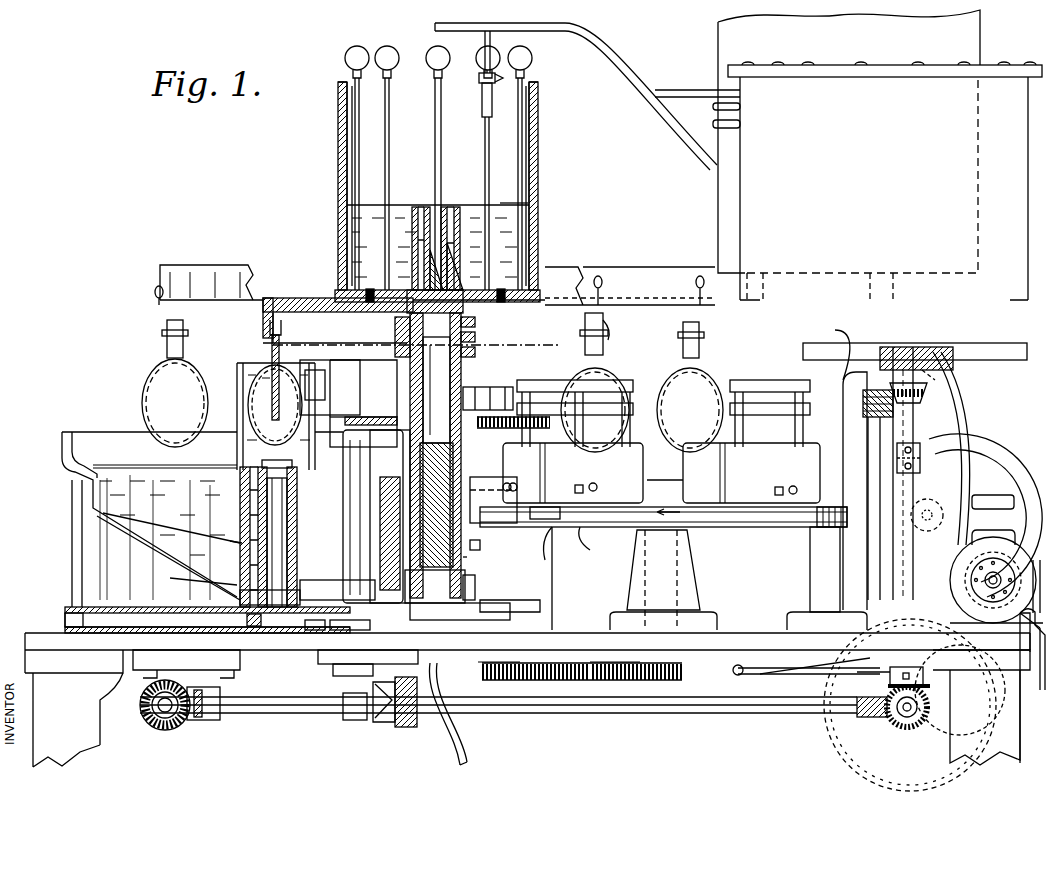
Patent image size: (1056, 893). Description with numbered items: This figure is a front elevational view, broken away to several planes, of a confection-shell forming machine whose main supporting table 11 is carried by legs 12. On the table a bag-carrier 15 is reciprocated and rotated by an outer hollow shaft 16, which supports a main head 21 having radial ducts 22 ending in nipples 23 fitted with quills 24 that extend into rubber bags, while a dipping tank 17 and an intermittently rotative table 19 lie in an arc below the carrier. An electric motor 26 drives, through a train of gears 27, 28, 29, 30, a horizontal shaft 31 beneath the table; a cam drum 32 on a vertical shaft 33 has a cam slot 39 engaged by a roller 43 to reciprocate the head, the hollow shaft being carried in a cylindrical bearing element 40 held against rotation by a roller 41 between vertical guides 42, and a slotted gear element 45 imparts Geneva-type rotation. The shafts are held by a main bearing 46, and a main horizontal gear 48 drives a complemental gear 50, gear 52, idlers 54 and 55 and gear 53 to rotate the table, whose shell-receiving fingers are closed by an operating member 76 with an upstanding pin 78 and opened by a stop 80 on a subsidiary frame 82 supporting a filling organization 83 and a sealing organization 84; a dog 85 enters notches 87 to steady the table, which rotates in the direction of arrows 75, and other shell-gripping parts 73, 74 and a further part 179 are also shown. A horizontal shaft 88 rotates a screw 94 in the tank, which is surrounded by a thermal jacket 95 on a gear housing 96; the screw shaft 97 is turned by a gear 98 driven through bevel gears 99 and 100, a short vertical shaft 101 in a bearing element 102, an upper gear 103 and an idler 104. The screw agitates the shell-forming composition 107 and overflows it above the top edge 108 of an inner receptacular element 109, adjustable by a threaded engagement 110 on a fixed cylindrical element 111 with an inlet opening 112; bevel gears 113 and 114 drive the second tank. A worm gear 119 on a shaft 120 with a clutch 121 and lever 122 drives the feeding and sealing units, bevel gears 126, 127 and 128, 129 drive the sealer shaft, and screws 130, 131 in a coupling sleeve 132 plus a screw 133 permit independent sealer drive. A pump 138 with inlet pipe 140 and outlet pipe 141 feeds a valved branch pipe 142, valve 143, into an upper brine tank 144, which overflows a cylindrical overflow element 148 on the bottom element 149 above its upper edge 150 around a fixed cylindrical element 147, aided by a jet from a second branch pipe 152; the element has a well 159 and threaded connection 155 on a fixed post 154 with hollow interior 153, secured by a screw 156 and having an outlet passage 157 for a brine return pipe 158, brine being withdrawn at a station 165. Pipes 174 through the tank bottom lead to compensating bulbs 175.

The main supporting table 11 is at (575, 640).
The legs 12 is at (1003, 740).
The bag-carrier 15 is at (331, 230).
The outer hollow shaft 16 is at (407, 325).
The dipping tank 17 is at (62, 453).
The intermittently rotative table 19 is at (625, 527).
The main head 21 is at (150, 330).
The radial channels or ducts 22 is at (345, 315).
The bag-carrying nipples 23 is at (263, 328).
The quill 24 is at (275, 402).
The electric motor 26 is at (966, 432).
The gear 27 is at (950, 516).
The gear 28 is at (933, 522).
The gear 29 is at (908, 648).
The gear 30 is at (945, 778).
The horizontal shaft 31 is at (903, 716).
The cam drum 32 is at (375, 488).
The vertical shaft 33 is at (380, 442).
The cam slot 39 is at (380, 575).
The cylindrical bearing element 40 is at (455, 566).
The roller 41 is at (475, 585).
The vertical guide 42 is at (485, 546).
The roller 43 is at (375, 583).
The slotted gear element 45 is at (478, 395).
The main bearing 46 is at (505, 621).
The main horizontal gear 48 is at (360, 434).
The complemental gear 50 is at (530, 425).
The gear 52 is at (482, 671).
The gear 53 is at (665, 678).
The shaft 54 is at (683, 598).
The idler 55 is at (605, 678).
The block 73 is at (593, 483).
The pin 74 is at (513, 483).
The arrows 75 is at (680, 505).
The movable operating member 76 is at (503, 488).
The upstanding pin 78 is at (502, 485).
The upstanding stop or pin 80 is at (578, 527).
The subsidiary frame 82 is at (825, 542).
The filling organization 83 is at (962, 55).
The sealing organization 84 is at (760, 204).
The resiliently supported dog 85 is at (527, 513).
The notches 87 is at (552, 528).
The horizontal shaft 88 is at (572, 712).
The spiral circulating element or screw 94 is at (225, 568).
The thermal jacket 95 is at (78, 548).
The gear housing 96 is at (68, 613).
The screw-carrying vertical shaft 97 is at (300, 553).
The gear 98 is at (240, 617).
The bevel gear 99 is at (412, 712).
The bevel gear 100 is at (393, 694).
The short vertical shaft 101 is at (355, 665).
The bearing element 102 is at (350, 641).
The upper gear 103 is at (440, 640).
The idler 104 is at (318, 626).
The shell-forming composition 107 is at (140, 487).
The top edge 108 is at (250, 362).
The inner receptacular element 109 is at (241, 416).
The threaded engagement 110 is at (258, 472).
The fixed cylindrical element 111 is at (232, 541).
The inlet opening 112 is at (248, 591).
The bevel gear 113 is at (190, 712).
The bevel gear 114 is at (165, 728).
The worm gear 119 is at (862, 712).
The shaft 120 is at (870, 681).
The clutch 121 is at (865, 661).
The push-rod or overbalanced lever 122 is at (740, 665).
The bevel gear 126 is at (925, 396).
The bevel gear 127 is at (870, 388).
The bevel gear 128 is at (930, 714).
The bevel gear 129 is at (933, 689).
The screw 130 is at (917, 446).
The screw 131 is at (920, 460).
The coupling sleeve 132 is at (922, 468).
The screw 133 is at (866, 446).
The pump 138 is at (975, 660).
The inlet pipe 140 is at (1035, 683).
The outlet pipe 141 is at (960, 523).
The branch pipe 142 is at (493, 110).
The valve 143 is at (498, 75).
The upper brine tank 144 is at (538, 150).
The fixed cylindrical element 147 is at (450, 257).
The cylindrical overflow element 148 is at (460, 272).
The bottom element 149 is at (525, 278).
The upper edge 150 is at (462, 212).
The second branch pipe 152 is at (437, 150).
The hollow interior 153 is at (475, 338).
The fixed post 154 is at (475, 352).
The threaded connection 155 is at (475, 322).
The screw 156 is at (447, 611).
The outlet passage 157 is at (470, 558).
The brine return pipe 158 is at (462, 742).
The well 159 is at (424, 212).
The station 165 is at (628, 364).
The pipes 174 is at (338, 134).
The compensating bulbs 175 is at (352, 56).
The pipe 179 is at (672, 88).